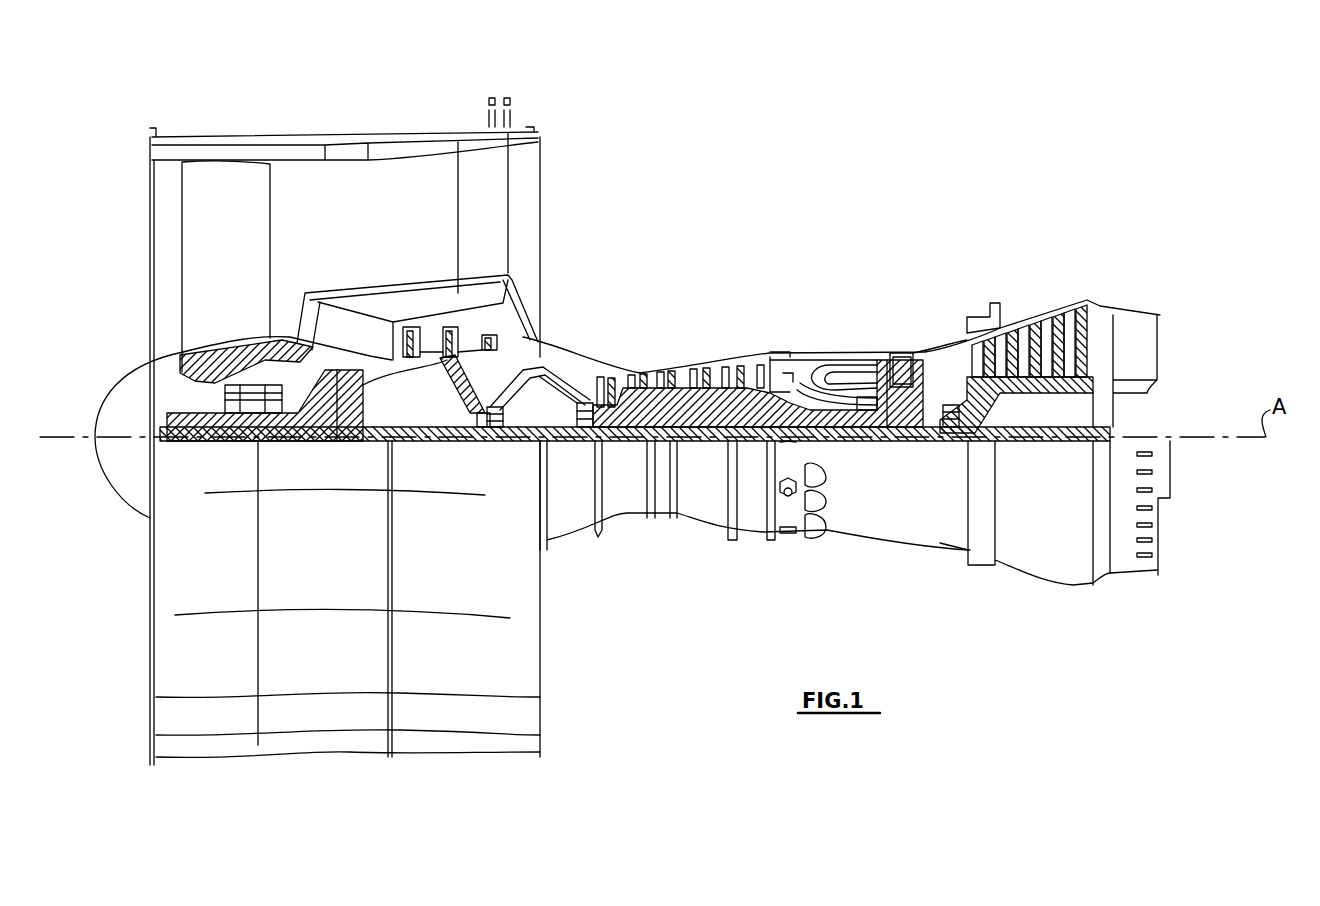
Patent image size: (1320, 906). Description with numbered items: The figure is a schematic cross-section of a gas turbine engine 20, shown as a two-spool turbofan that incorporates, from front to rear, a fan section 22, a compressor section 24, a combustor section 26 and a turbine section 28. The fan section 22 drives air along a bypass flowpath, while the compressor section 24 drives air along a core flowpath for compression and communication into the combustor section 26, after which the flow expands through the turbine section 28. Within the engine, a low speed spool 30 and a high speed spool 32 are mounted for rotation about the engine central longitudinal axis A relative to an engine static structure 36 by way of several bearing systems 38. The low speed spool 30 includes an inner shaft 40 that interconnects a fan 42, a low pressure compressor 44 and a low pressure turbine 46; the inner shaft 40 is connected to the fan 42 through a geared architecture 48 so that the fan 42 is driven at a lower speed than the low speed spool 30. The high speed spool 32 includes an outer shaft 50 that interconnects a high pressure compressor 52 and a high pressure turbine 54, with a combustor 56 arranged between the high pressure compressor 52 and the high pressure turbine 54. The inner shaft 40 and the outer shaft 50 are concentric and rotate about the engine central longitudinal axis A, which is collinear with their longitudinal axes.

The gas turbine engine 20 is at (855, 176).
The fan section 22 is at (268, 128).
The compressor section 24 is at (592, 337).
The combustor section 26 is at (828, 330).
The turbine section 28 is at (986, 290).
The low speed spool 30 is at (705, 443).
The high speed spool 32 is at (748, 405).
The engine static structure 36 is at (748, 537).
The bearing systems 38 is at (493, 440).
The inner shaft 40 is at (557, 443).
The fan 42 is at (232, 274).
The low pressure compressor 44 is at (462, 340).
The low pressure turbine 46 is at (1035, 330).
The geared architecture 48 is at (352, 420).
The outer shaft 50 is at (840, 427).
The high pressure compressor 52 is at (682, 405).
The high pressure turbine 54 is at (898, 352).
The combustor 56 is at (832, 376).